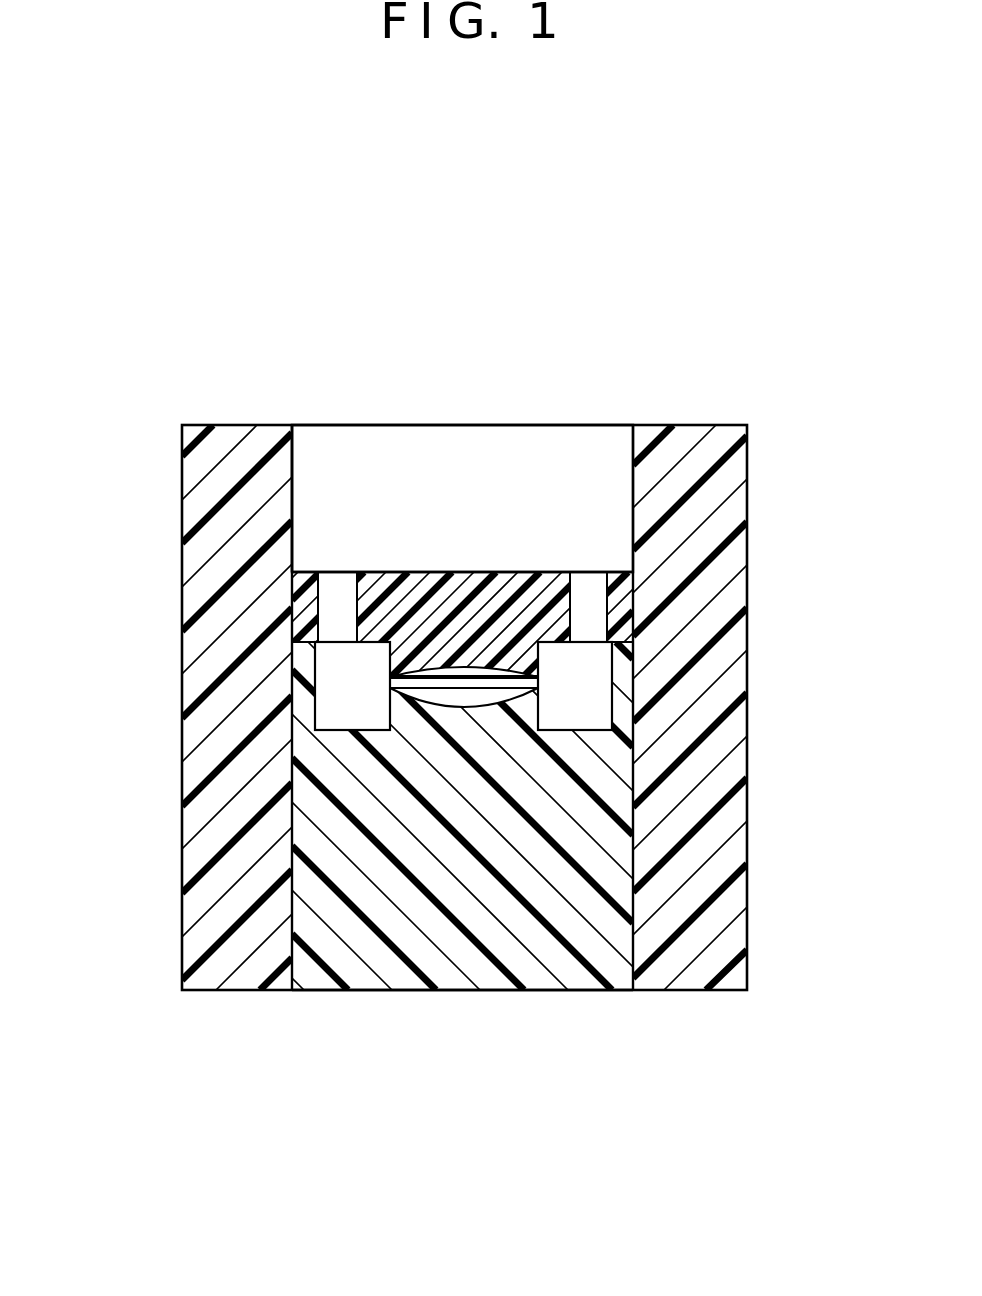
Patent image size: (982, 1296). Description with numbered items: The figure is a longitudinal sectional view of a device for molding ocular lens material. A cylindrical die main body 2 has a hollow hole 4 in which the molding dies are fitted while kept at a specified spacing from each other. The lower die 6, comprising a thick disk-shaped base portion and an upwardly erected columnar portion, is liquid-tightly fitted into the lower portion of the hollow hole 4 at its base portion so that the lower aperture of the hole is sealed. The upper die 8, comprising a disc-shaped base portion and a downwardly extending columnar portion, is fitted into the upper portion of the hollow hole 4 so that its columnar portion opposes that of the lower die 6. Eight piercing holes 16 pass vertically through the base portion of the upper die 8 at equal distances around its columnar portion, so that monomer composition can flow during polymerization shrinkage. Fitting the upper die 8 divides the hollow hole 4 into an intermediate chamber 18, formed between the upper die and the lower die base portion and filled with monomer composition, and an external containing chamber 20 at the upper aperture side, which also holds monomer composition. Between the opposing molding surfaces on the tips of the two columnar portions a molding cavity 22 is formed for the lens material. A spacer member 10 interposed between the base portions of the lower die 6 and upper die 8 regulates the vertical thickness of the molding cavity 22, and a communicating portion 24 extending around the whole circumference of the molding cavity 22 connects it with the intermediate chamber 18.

The die main body 2 is at (708, 852).
The hollow hole 4 is at (312, 488).
The lower die 6 is at (453, 947).
The upper die 8 is at (477, 597).
The spacer member 10 is at (617, 703).
The piercing holes 16 is at (339, 600).
The intermediate chamber 18 is at (352, 702).
The external containing chamber 20 is at (423, 513).
The molding cavity 22 is at (468, 697).
The communicating portion 24 is at (388, 680).